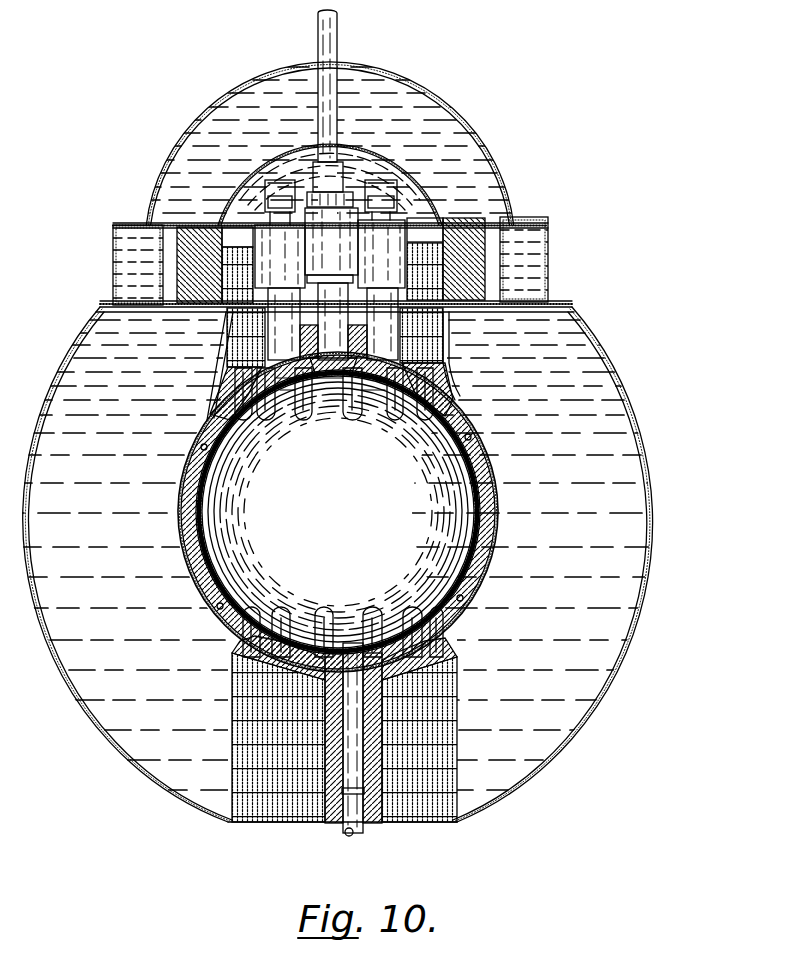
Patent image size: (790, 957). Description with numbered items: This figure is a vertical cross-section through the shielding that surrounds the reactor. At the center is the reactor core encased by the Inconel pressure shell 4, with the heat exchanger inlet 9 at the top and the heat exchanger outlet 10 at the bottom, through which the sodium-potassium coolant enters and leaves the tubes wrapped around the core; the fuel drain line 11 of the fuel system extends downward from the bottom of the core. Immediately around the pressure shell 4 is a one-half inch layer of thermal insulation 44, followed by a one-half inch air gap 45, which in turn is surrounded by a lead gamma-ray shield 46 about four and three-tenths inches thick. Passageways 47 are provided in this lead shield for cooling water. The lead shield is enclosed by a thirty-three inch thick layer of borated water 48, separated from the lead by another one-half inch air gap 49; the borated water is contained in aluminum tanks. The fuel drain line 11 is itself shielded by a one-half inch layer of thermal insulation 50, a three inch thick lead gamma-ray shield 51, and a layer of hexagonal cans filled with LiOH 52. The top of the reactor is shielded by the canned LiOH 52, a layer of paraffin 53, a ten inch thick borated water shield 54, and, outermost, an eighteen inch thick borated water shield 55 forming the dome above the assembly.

The pressure shell 4 is at (344, 509).
The heat exchanger inlet 9 is at (243, 377).
The heat exchanger outlet 10 is at (240, 666).
The fuel drain line 11 is at (362, 832).
The thermal insulation 44 is at (470, 522).
The air gap 45 is at (474, 506).
The lead gamma-ray shield 46 is at (484, 448).
The passageways 47 is at (480, 478).
The borated water 48 is at (115, 536).
The air gap 49 is at (494, 560).
The thermal insulation 50 is at (370, 823).
The lead gamma-ray shield 51 is at (332, 823).
The hexagonal cans filled with LiOH 52 is at (430, 328).
The layer of paraffin 53 is at (462, 226).
The borated water shield 54 is at (533, 255).
The borated water shield 55 is at (196, 143).